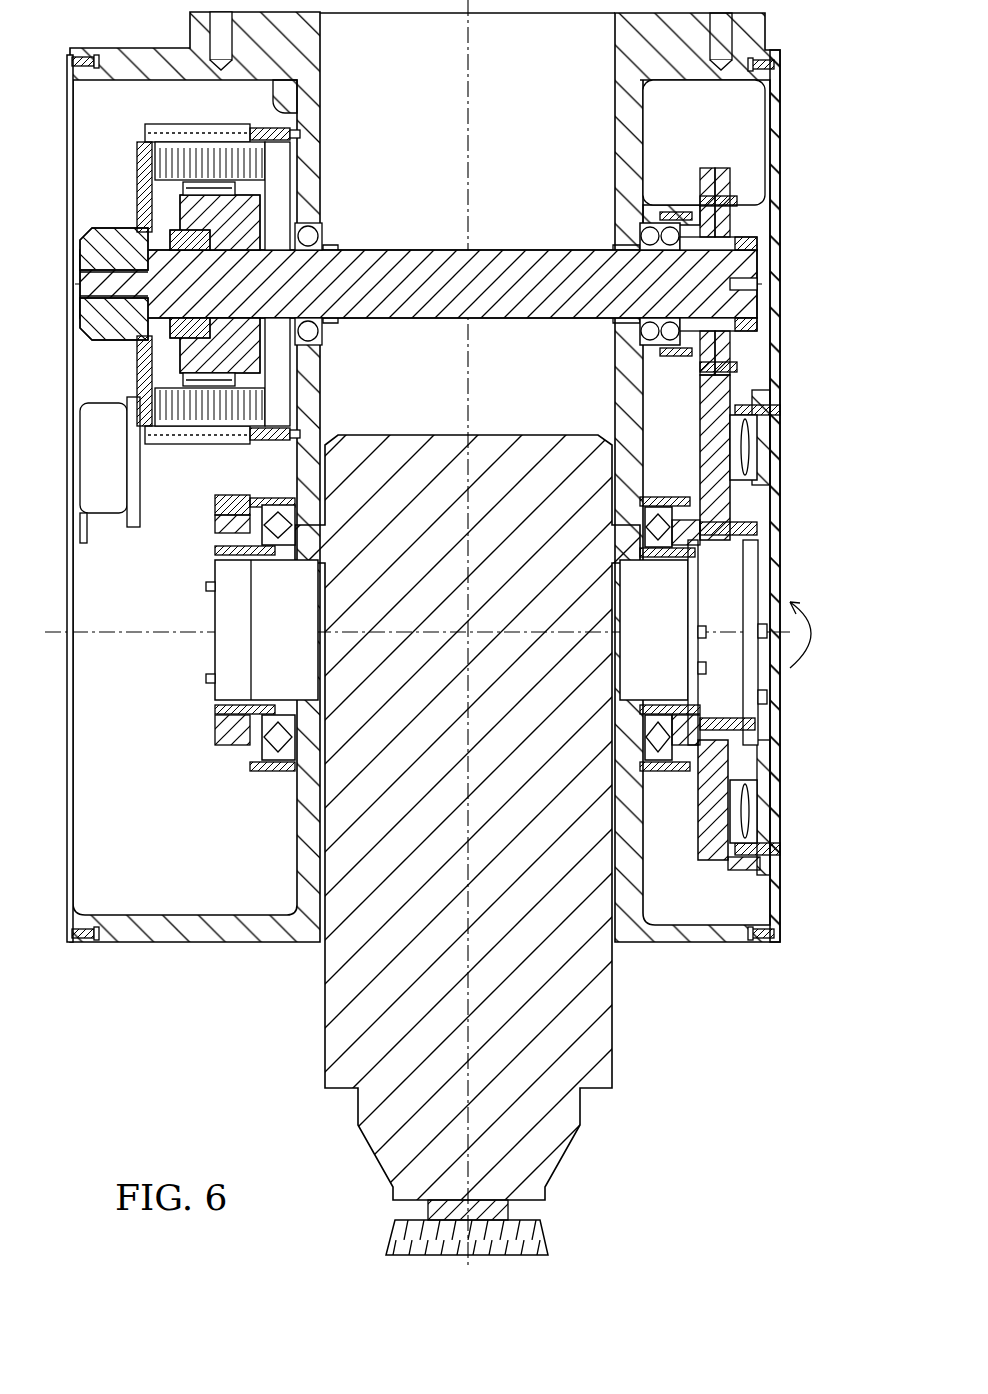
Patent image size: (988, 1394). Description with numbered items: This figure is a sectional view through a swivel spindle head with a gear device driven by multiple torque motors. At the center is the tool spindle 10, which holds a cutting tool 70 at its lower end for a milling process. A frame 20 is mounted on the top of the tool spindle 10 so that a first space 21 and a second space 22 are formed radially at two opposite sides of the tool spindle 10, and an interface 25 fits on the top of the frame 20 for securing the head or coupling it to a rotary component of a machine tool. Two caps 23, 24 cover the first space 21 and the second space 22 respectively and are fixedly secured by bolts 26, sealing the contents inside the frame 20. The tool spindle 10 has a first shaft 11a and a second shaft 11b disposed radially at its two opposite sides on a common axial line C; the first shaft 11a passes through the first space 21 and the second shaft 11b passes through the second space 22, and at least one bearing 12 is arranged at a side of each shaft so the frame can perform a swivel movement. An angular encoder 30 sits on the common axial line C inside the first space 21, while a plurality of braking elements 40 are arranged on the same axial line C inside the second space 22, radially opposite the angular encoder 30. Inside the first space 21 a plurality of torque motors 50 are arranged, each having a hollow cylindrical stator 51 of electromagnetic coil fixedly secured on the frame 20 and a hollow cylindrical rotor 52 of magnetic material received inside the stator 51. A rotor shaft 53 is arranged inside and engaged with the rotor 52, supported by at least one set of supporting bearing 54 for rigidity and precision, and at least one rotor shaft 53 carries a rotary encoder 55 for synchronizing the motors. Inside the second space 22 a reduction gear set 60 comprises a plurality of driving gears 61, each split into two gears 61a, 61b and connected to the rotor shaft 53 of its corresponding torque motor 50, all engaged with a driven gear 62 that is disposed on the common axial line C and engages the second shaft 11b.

The tool spindle 10 is at (560, 1152).
The first shaft 11a is at (283, 703).
The second shaft 11b is at (643, 703).
The bearing 12 is at (272, 765).
The frame 20 is at (424, 513).
The first space 21 is at (190, 900).
The second space 22 is at (712, 900).
The cap 23 is at (68, 745).
The cap 24 is at (780, 125).
The interface 25 is at (195, 20).
The bolt 26 is at (780, 62).
The angular encoder 30 is at (230, 502).
The braking element 40 is at (760, 455).
The torque motor 50 is at (230, 352).
The stator 51 is at (170, 168).
The rotor 52 is at (195, 212).
The rotor shaft 53 is at (445, 257).
The supporting bearing 54 is at (305, 230).
The rotary encoder 55 is at (85, 258).
The reduction gear set 60 is at (760, 350).
The driving gear 61 is at (708, 229).
The gear 61a is at (705, 178).
The gear 61b is at (728, 178).
The driven gear 62 is at (728, 510).
The cutting tool 70 is at (535, 1240).
The common axial line C is at (816, 635).